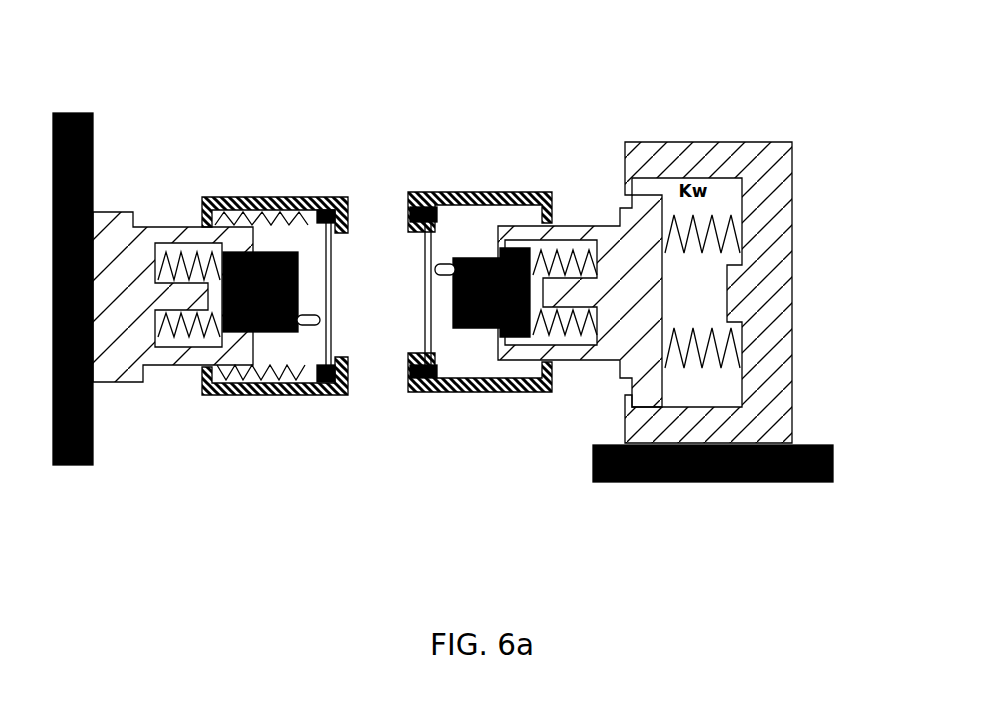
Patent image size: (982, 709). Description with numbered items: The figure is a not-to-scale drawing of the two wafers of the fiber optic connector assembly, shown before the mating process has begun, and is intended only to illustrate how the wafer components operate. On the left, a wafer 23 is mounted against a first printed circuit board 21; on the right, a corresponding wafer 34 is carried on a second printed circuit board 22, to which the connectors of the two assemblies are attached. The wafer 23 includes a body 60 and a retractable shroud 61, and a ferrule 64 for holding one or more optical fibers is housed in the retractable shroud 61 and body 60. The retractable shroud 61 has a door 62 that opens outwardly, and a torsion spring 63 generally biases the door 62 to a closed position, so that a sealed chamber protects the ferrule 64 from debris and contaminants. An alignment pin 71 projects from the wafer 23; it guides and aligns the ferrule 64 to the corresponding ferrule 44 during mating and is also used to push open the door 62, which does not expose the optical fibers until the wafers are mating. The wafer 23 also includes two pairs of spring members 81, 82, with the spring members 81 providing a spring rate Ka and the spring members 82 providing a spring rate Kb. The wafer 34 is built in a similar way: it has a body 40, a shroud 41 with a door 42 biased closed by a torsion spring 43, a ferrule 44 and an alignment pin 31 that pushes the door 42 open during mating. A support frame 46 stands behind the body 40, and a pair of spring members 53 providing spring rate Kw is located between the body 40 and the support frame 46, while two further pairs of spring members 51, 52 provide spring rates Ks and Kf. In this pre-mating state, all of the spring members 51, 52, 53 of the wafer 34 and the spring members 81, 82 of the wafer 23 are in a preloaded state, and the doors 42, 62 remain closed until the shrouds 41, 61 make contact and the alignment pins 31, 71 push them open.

The first printed circuit board 21 is at (57, 455).
The second printed circuit board 22 is at (833, 462).
The wafer 23 is at (184, 124).
The alignment pin 31 is at (447, 267).
The wafer 34 is at (581, 68).
The body 40 is at (580, 279).
The shroud 41 is at (478, 192).
The door 42 is at (423, 293).
The torsion spring 43 is at (419, 205).
The ferrule 44 is at (472, 330).
The support frame 46 is at (712, 158).
The spring members 51 is at (505, 342).
The spring members 52 is at (575, 330).
The spring members 53 is at (726, 347).
The body 60 is at (124, 226).
The retractable shroud 61 is at (252, 197).
The door 62 is at (333, 265).
The torsion spring 63 is at (329, 208).
The ferrule 64 is at (280, 335).
The alignment pin 71 is at (317, 323).
The spring members 81 is at (288, 380).
The spring members 82 is at (207, 292).